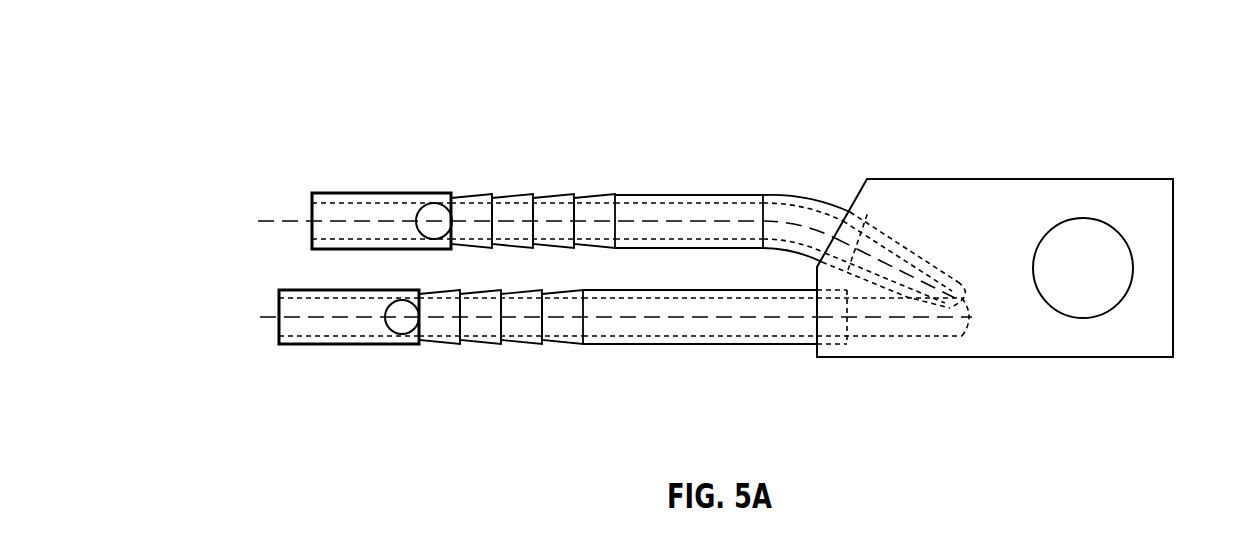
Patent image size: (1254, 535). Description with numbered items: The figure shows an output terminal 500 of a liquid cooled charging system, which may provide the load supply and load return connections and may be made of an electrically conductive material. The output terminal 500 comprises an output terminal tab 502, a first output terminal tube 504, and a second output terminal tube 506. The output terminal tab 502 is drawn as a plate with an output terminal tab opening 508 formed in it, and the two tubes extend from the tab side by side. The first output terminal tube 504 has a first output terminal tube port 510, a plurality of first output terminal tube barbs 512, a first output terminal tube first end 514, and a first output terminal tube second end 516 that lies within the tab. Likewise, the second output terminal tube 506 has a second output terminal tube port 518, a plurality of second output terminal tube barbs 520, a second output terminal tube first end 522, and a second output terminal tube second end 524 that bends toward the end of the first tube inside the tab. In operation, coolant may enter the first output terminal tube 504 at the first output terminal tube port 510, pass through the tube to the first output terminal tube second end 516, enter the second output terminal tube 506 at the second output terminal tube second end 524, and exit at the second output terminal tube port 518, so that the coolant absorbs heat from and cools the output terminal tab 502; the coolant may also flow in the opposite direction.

The output terminal 500 is at (182, 80).
The output terminal tab 502 is at (953, 178).
The first output terminal tube 504 is at (712, 353).
The second output terminal tube 506 is at (689, 184).
The output terminal tab opening 508 is at (1120, 273).
The first output terminal tube port 510 is at (395, 323).
The first output terminal tube barbs 512 is at (519, 353).
The first output terminal tube first end 514 is at (274, 304).
The first output terminal tube second end 516 is at (947, 338).
The second output terminal tube port 518 is at (433, 213).
The second output terminal tube barbs 520 is at (523, 184).
The second output terminal tube first end 522 is at (300, 207).
The second output terminal tube second end 524 is at (967, 282).